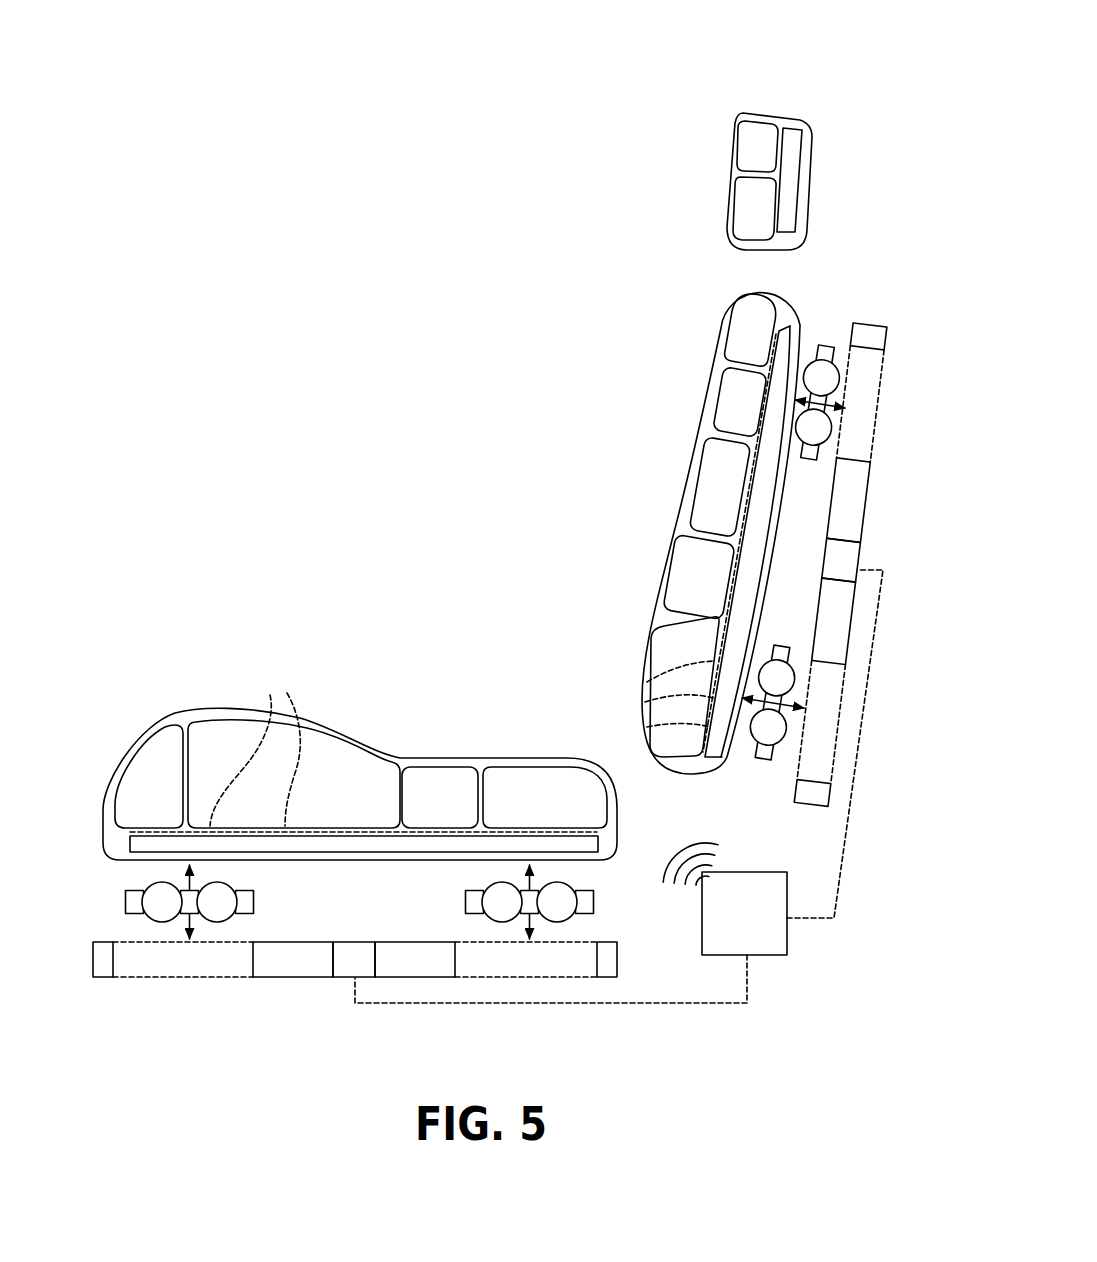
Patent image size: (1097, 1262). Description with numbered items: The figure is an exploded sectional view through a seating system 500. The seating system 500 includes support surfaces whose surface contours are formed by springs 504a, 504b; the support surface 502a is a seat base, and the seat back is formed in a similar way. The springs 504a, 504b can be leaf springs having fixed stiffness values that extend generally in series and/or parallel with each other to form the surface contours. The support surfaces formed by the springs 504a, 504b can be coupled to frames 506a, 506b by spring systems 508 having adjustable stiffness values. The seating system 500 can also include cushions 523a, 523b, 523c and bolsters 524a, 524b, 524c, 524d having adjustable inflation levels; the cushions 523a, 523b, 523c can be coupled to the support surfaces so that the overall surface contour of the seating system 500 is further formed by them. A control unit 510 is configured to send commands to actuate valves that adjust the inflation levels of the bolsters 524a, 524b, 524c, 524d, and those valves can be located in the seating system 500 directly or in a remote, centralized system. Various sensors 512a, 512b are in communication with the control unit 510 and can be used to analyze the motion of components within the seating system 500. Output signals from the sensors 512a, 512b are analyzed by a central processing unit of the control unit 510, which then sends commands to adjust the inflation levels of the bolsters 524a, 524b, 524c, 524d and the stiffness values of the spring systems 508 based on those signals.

The seating system 500 is at (447, 297).
The support surface 502a is at (392, 853).
The spring 504a is at (256, 749).
The spring 504b is at (647, 727).
The frame 506a is at (105, 977).
The frame 506b is at (889, 338).
The spring system 508 is at (824, 338).
The control unit 510 is at (786, 938).
The sensor 512a is at (347, 978).
The sensor 512b is at (860, 556).
The cushion 523a is at (147, 731).
The cushion 523b is at (674, 536).
The cushion 523c is at (728, 145).
The bolster 524a is at (498, 765).
The bolster 524b is at (688, 595).
The bolster 524c is at (740, 347).
The bolster 524d is at (762, 117).